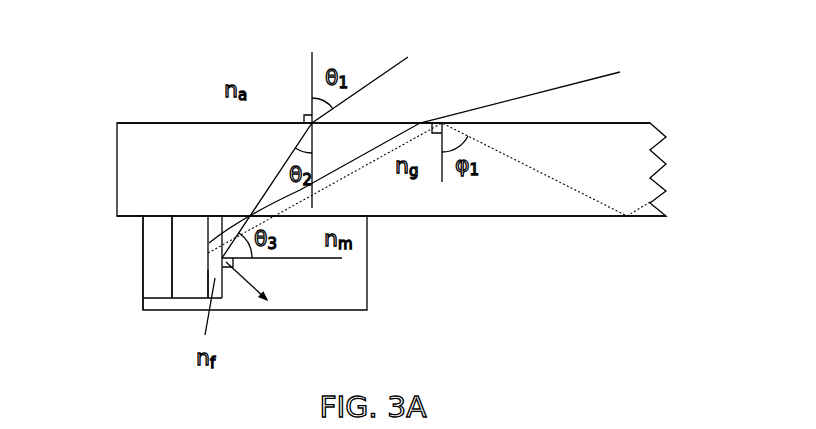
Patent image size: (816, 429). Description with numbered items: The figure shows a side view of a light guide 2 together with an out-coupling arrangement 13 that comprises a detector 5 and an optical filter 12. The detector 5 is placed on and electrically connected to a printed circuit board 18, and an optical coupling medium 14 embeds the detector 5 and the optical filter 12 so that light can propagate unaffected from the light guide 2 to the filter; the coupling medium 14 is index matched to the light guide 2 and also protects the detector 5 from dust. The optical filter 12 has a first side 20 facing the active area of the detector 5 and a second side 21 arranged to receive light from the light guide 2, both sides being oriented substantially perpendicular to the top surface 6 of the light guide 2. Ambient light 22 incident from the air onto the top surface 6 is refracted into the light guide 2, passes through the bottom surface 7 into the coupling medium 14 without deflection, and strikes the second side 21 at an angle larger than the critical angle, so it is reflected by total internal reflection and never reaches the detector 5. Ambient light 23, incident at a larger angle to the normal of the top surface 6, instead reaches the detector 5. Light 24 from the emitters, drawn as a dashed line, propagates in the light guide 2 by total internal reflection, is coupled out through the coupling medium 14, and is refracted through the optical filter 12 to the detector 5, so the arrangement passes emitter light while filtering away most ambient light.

The light guide 2 is at (172, 138).
The top surface 6 is at (207, 122).
The bottom surface 7 is at (468, 215).
The ambient light 22 is at (388, 67).
The ambient light 23 is at (507, 100).
The light from emitters 24 is at (570, 187).
The optical coupling medium 14 is at (340, 285).
The optical filter 12 is at (218, 257).
The out-coupling arrangement 13 is at (172, 235).
The detector 5 is at (180, 259).
The printed circuit board 18 is at (155, 230).
The first side 20 is at (208, 273).
The second side 21 is at (225, 287).